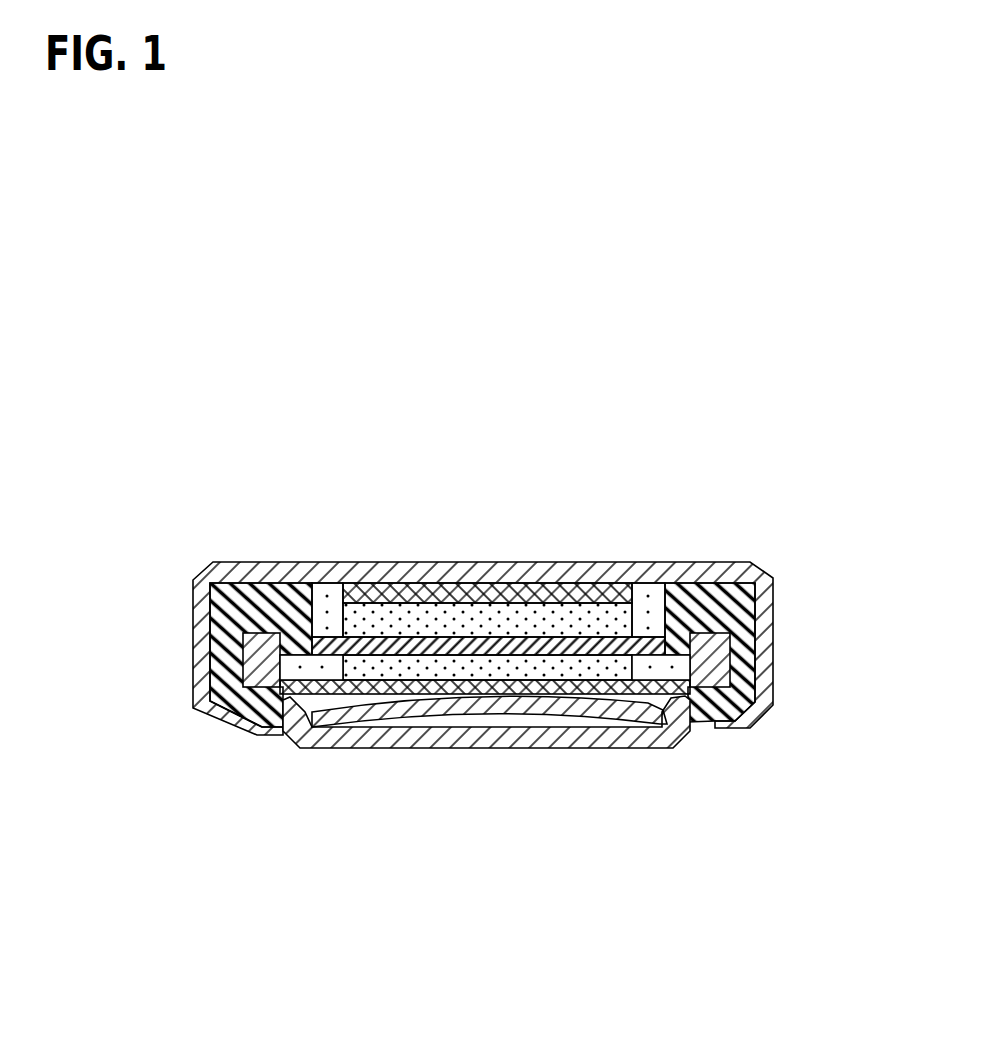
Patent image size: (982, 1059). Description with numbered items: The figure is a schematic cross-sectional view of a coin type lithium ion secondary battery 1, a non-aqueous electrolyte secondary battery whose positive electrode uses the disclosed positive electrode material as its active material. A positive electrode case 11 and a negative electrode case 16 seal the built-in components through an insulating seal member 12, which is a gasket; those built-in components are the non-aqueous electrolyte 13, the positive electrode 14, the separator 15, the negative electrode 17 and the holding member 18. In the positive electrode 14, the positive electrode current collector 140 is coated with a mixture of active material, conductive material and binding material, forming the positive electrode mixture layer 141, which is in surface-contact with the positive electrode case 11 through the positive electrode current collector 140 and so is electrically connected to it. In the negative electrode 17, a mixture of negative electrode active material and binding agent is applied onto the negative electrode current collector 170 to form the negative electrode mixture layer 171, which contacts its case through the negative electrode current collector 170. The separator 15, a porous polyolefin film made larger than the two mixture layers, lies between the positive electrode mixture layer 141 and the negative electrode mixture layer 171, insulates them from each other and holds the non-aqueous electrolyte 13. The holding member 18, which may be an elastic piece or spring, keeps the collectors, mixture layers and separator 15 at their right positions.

The coin type lithium ion secondary battery 1 is at (186, 440).
The positive electrode case 11 is at (200, 630).
The seal member (gasket) 12 is at (266, 600).
The non-aqueous electrolyte 13 is at (252, 683).
The positive electrode 14 is at (488, 512).
The positive electrode current collector 140 is at (416, 606).
The positive electrode mixture layer 141 is at (497, 606).
The separator 15 is at (613, 642).
The negative electrode case 16 is at (300, 748).
The negative electrode 17 is at (485, 785).
The negative electrode current collector 170 is at (475, 690).
The negative electrode mixture layer 171 is at (412, 667).
The holding member 18 is at (592, 712).